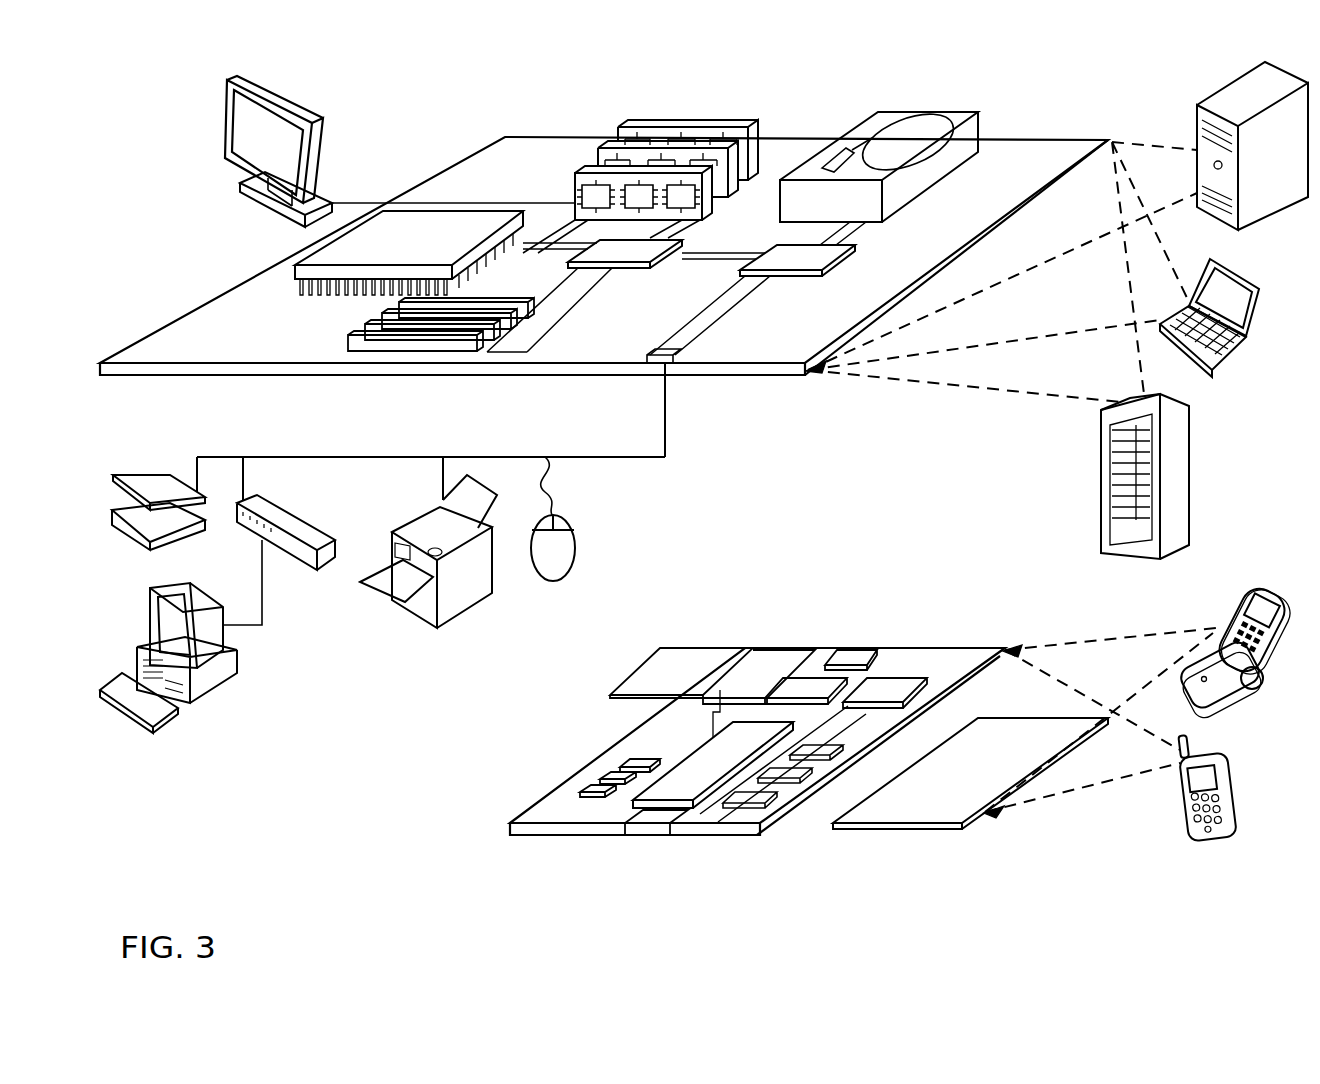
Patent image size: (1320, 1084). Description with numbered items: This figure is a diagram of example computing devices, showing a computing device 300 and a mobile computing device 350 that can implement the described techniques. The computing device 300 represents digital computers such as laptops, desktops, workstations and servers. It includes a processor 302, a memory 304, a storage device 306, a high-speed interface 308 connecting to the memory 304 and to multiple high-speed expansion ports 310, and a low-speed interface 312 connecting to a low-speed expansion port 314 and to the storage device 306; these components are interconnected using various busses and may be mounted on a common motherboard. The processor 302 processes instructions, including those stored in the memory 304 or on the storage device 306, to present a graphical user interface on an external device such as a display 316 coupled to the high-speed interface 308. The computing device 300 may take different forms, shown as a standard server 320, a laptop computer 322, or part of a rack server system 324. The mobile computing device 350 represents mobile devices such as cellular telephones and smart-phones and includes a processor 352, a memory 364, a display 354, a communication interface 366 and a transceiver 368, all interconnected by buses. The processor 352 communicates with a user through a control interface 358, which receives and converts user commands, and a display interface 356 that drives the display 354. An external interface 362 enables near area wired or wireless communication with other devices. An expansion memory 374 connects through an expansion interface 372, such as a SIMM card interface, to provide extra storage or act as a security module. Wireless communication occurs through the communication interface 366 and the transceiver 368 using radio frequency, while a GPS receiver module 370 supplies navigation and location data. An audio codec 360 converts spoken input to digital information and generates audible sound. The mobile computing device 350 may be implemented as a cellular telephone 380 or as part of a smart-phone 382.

The computing device 300 is at (422, 96).
The processor 302 is at (300, 268).
The memory 304 is at (640, 152).
The storage device 306 is at (850, 138).
The high-speed interface 308 is at (605, 250).
The high-speed expansion ports 310 is at (365, 336).
The low-speed interface 312 is at (786, 258).
The low-speed expansion port 314 is at (670, 366).
The display 316 is at (236, 82).
The standard server 320 is at (1197, 122).
The laptop computer 322 is at (1236, 370).
The rack server system 324 is at (1102, 502).
The mobile computing device 350 is at (482, 840).
The processor 352 is at (683, 795).
The display 354 is at (925, 815).
The display interface 356 is at (755, 800).
The control interface 358 is at (790, 778).
The audio codec 360 is at (810, 758).
The external interface 362 is at (660, 822).
The memory 364 is at (603, 786).
The communication interface 366 is at (808, 688).
The transceiver 368 is at (885, 690).
The GPS receiver module 370 is at (855, 655).
The expansion interface 372 is at (733, 662).
The expansion memory 374 is at (662, 664).
The cellular telephone 380 is at (1238, 608).
The smart-phone 382 is at (1186, 792).